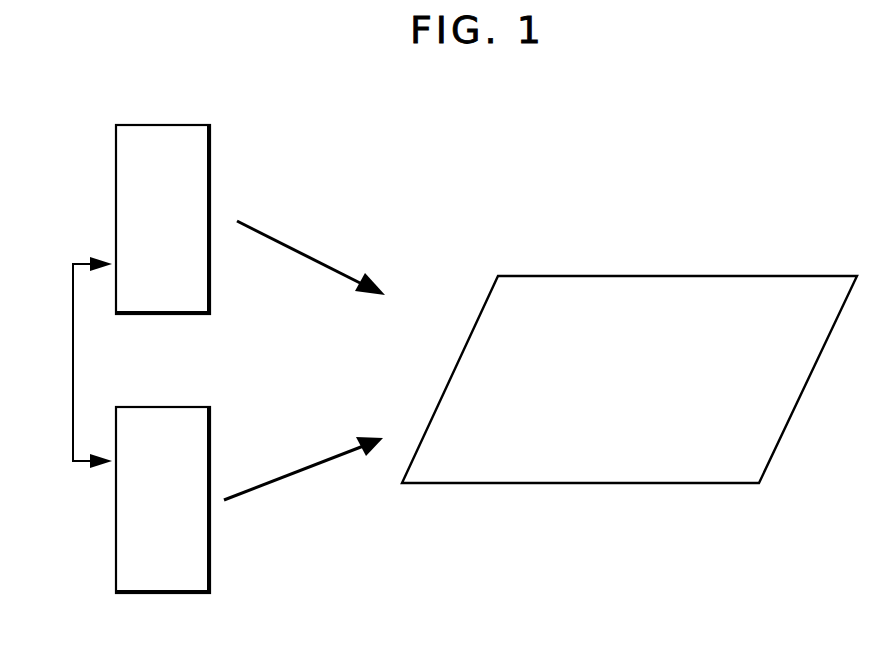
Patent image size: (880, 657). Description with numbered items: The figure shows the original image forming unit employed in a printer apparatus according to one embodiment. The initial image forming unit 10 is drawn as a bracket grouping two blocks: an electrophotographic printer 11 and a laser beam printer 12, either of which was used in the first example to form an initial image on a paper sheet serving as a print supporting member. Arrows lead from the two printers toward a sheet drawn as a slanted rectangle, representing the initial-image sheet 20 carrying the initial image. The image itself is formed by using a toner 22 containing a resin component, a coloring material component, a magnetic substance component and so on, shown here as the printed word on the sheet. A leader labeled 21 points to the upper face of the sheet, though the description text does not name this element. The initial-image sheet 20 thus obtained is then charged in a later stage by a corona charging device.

The initial image forming unit 10 is at (74, 362).
The electrophotographic printer 11 is at (169, 236).
The laser beam printer 12 is at (171, 521).
The initial-image sheet 20 is at (532, 486).
The object surface 21 is at (668, 292).
The toner 22 is at (737, 412).